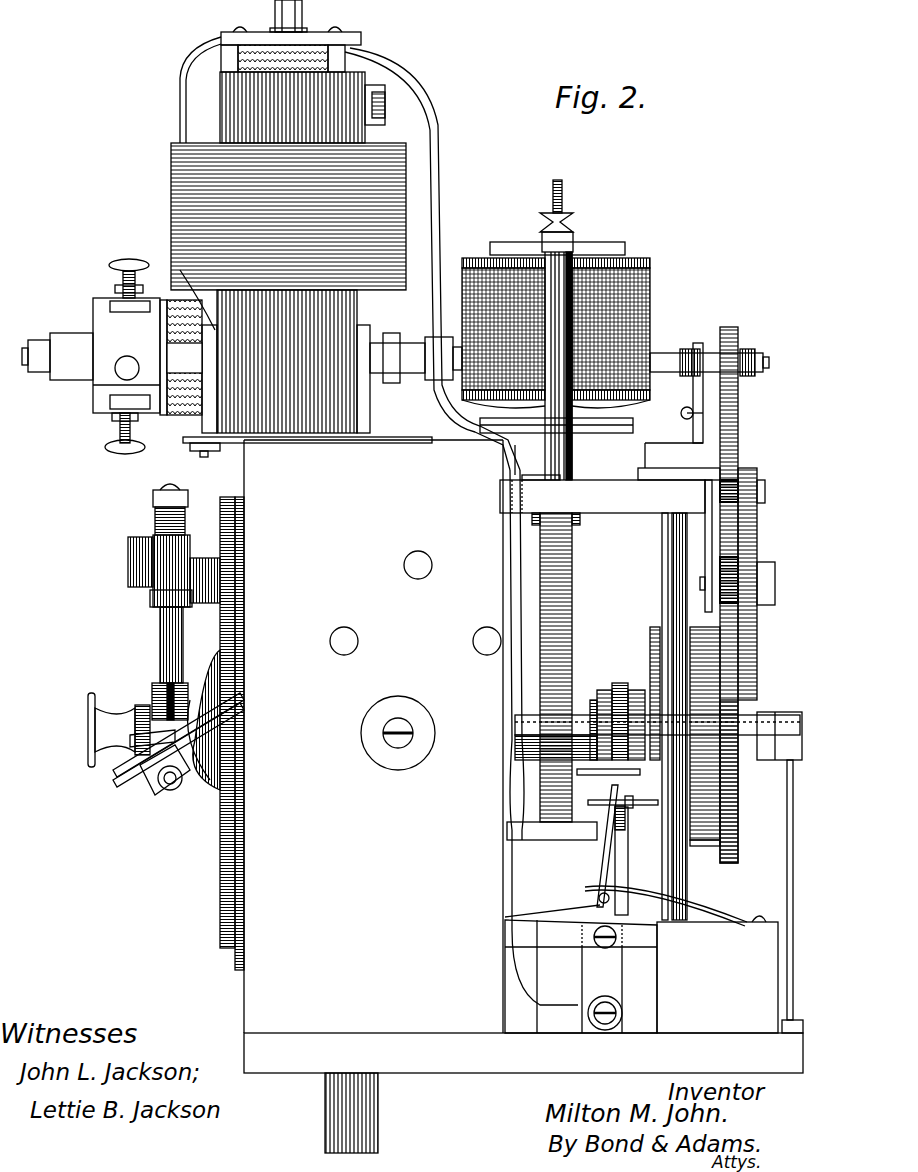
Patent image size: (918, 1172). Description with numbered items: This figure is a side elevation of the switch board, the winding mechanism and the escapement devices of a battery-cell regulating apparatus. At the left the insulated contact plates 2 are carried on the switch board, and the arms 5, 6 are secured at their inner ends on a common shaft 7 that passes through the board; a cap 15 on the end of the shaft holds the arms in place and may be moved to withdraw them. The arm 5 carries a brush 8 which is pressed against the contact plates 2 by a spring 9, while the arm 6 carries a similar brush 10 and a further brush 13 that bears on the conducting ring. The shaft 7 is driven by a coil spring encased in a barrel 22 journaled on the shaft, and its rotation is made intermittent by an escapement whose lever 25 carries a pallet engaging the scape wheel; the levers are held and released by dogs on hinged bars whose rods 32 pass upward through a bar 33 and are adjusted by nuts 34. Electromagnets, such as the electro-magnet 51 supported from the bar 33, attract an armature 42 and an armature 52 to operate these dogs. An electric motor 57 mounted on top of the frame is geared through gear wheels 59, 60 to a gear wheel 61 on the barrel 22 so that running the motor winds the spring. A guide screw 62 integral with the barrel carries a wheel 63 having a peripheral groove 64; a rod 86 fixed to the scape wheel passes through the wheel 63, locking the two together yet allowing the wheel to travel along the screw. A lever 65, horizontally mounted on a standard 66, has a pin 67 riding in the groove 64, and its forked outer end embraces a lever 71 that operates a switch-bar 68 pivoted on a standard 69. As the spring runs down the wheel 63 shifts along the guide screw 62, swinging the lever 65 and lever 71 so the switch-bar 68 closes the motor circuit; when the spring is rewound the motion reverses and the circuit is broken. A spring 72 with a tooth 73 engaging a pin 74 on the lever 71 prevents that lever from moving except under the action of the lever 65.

The contact plates 2 is at (224, 520).
The arm 5 is at (162, 640).
The arm 6 is at (168, 786).
The shaft 7 is at (578, 728).
The brush 8 is at (205, 560).
The spring 9 is at (158, 520).
The brush 10 is at (232, 748).
The brush 13 is at (232, 700).
The cap 15 is at (90, 735).
The barrel 22 is at (704, 842).
The lever 25 is at (590, 600).
The rods 32 is at (562, 195).
The bar 33 is at (575, 240).
The nuts 34 is at (570, 218).
The armature 42 is at (633, 425).
The electro-magnet 51 is at (485, 272).
The armature 52 is at (735, 378).
The electric motor 57 is at (271, 235).
The gear wheel 59 is at (738, 440).
The gear wheel 60 is at (757, 628).
The gear wheel 61 is at (735, 820).
The guide screw 62 is at (636, 695).
The wheel 63 is at (610, 690).
The groove 64 is at (620, 683).
The lever 65 is at (628, 808).
The standard 66 is at (628, 865).
The pin 67 is at (630, 806).
The switch-bar 68 is at (595, 893).
The standard 69 is at (605, 997).
The lever 71 is at (605, 864).
The spring 72 is at (648, 896).
The tooth 73 is at (557, 940).
The pin 74 is at (605, 928).
The rod 86 is at (590, 772).